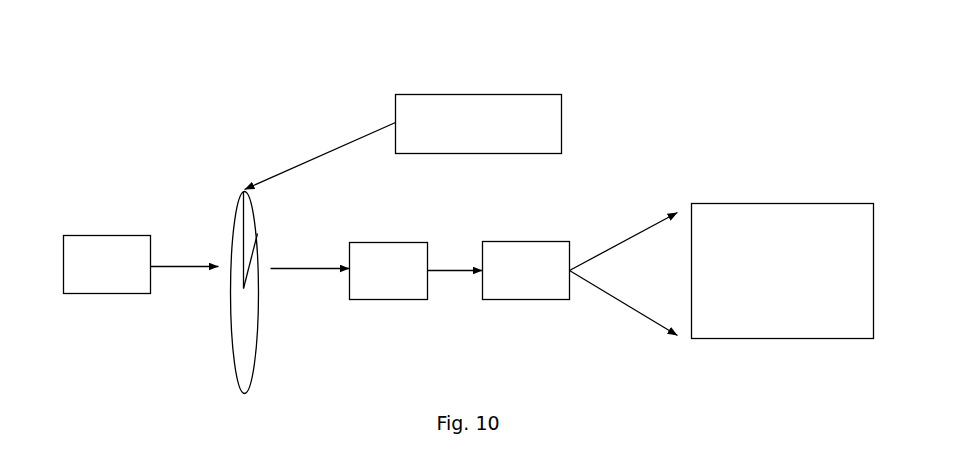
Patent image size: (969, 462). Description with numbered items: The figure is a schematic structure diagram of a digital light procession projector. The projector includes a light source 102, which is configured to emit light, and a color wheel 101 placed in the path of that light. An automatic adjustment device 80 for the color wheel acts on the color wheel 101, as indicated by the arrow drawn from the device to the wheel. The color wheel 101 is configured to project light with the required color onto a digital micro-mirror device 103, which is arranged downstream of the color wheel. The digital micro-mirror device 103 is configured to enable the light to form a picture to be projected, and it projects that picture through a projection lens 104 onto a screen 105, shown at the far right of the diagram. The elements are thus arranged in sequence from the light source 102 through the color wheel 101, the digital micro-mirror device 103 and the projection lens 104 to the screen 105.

The automatic adjustment device 80 is at (480, 94).
The color wheel 101 is at (258, 234).
The light source 102 is at (108, 234).
The digital micro-mirror device 103 is at (390, 240).
The projection lens 104 is at (528, 240).
The screen 105 is at (782, 204).